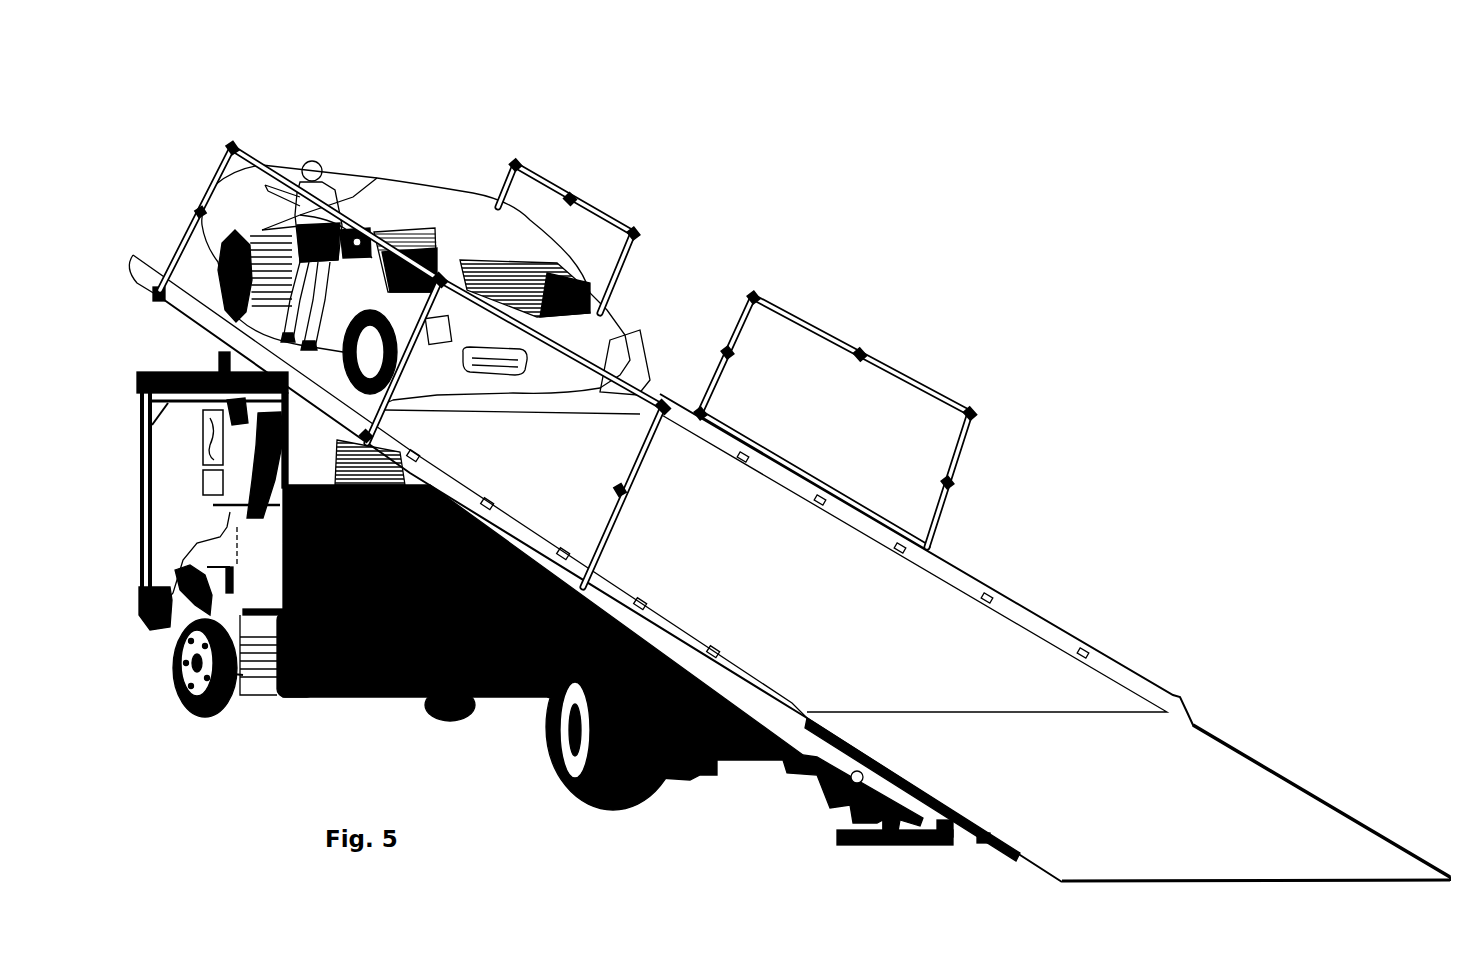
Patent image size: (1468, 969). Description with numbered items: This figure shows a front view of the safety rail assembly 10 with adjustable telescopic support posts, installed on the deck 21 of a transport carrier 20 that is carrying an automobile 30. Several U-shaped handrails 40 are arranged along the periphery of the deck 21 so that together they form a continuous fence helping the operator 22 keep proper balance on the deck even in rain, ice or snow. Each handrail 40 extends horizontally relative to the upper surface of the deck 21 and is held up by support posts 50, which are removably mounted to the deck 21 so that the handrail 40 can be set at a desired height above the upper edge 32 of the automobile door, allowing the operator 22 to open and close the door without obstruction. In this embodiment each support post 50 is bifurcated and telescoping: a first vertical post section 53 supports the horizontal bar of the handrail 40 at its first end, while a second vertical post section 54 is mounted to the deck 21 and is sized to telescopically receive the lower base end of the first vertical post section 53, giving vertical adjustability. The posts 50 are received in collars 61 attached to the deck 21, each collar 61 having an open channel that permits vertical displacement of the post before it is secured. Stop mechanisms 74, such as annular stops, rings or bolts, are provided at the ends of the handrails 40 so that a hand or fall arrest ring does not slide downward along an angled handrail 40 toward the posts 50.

The safety rail assembly 10 is at (564, 170).
The transport carrier 20 is at (260, 693).
The deck 21 is at (762, 567).
The operator 22 is at (313, 160).
The automobile 30 is at (478, 230).
The upper edge 32 is at (293, 178).
The handrail 40 is at (251, 160).
The support post 50 is at (192, 228).
The first vertical post section 53 is at (210, 180).
The second vertical post section 54 is at (172, 258).
The collar 61 is at (157, 292).
The stop mechanism 74 is at (227, 147).